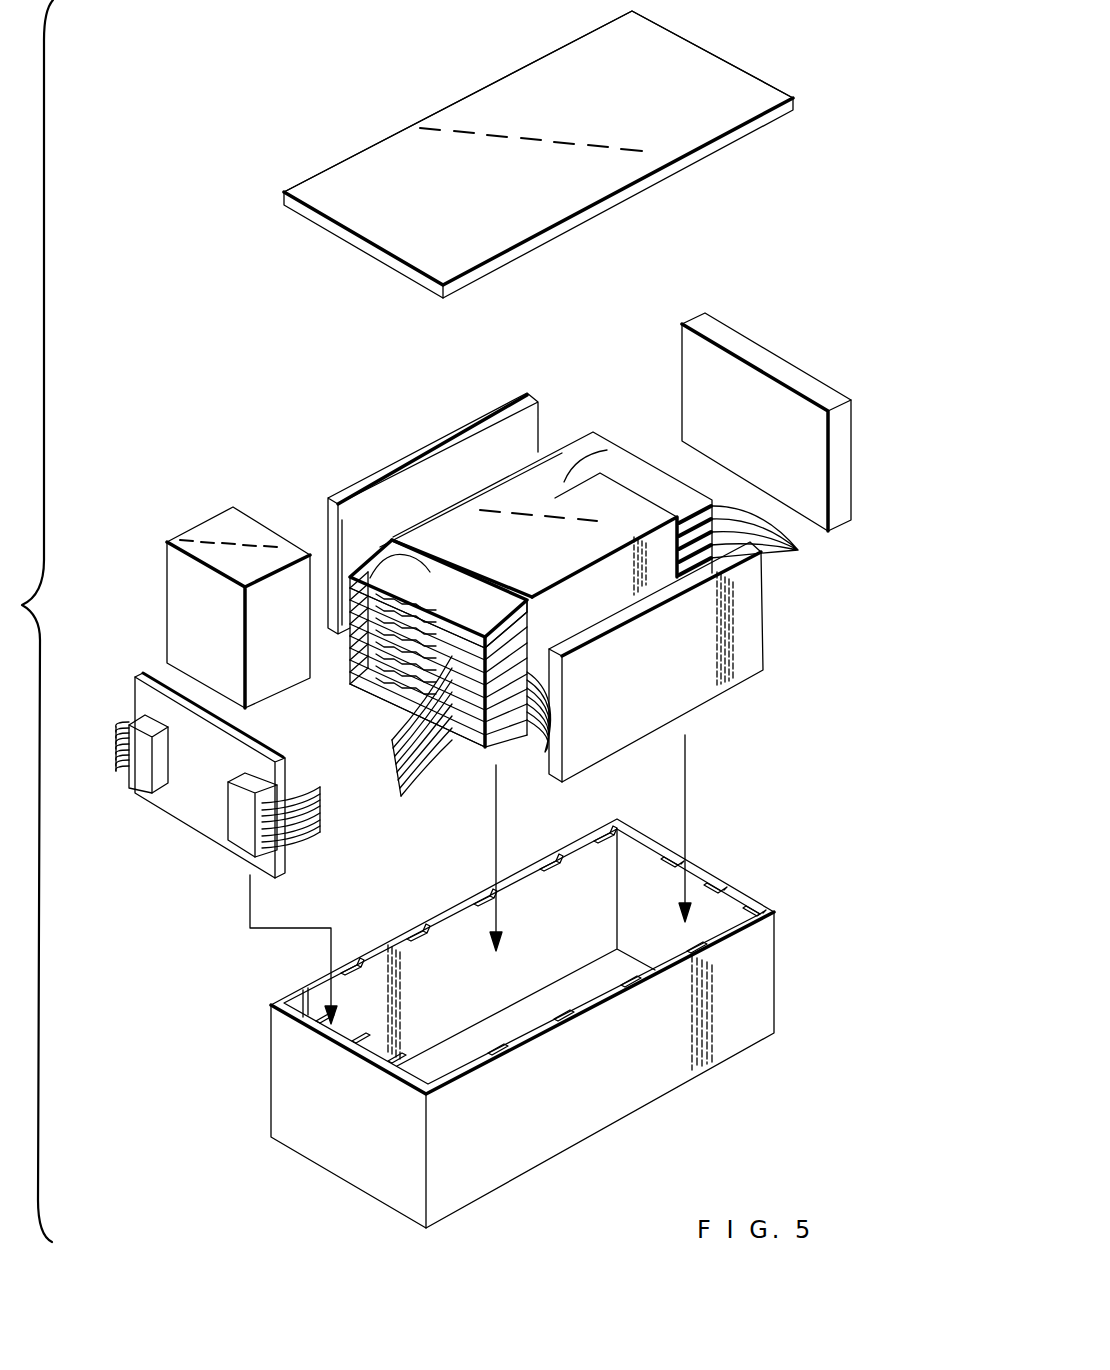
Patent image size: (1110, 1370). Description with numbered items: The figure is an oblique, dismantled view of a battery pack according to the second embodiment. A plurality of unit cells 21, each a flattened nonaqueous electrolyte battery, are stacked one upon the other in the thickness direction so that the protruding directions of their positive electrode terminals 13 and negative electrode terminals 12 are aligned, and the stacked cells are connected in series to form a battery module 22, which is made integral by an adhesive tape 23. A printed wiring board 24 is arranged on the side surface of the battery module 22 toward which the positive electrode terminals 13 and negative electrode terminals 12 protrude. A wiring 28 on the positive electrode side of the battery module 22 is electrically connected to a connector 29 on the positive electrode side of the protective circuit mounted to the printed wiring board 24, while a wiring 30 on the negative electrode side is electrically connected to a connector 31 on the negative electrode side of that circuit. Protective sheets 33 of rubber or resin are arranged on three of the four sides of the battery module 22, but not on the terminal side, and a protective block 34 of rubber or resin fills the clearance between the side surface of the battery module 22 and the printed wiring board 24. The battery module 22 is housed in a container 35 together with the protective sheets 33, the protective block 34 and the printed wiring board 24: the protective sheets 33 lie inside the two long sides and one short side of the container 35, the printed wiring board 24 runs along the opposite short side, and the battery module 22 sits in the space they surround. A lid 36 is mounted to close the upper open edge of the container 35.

The negative electrode terminal 12 is at (400, 577).
The positive electrode terminal 13 is at (440, 630).
The unit cell 21 is at (676, 647).
The battery module 22 is at (493, 462).
The adhesive tape 23 is at (628, 525).
The printed wiring board 24 is at (185, 810).
The wiring 28 is at (326, 843).
The connector 29 is at (237, 835).
The wiring 30 is at (133, 772).
The connector 31 is at (106, 712).
The protective sheet 33 is at (847, 467).
The protective block 34 is at (205, 532).
The container 35 is at (760, 997).
The lid 36 is at (732, 79).